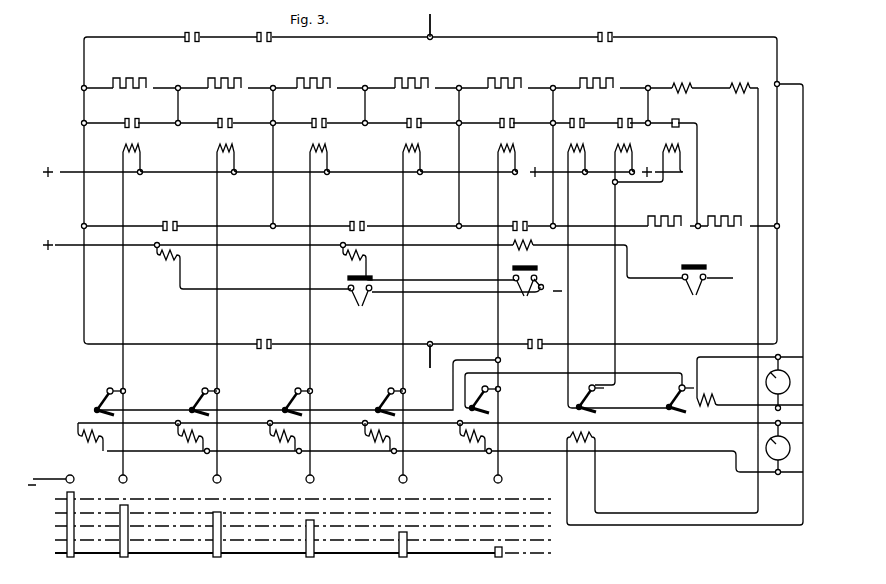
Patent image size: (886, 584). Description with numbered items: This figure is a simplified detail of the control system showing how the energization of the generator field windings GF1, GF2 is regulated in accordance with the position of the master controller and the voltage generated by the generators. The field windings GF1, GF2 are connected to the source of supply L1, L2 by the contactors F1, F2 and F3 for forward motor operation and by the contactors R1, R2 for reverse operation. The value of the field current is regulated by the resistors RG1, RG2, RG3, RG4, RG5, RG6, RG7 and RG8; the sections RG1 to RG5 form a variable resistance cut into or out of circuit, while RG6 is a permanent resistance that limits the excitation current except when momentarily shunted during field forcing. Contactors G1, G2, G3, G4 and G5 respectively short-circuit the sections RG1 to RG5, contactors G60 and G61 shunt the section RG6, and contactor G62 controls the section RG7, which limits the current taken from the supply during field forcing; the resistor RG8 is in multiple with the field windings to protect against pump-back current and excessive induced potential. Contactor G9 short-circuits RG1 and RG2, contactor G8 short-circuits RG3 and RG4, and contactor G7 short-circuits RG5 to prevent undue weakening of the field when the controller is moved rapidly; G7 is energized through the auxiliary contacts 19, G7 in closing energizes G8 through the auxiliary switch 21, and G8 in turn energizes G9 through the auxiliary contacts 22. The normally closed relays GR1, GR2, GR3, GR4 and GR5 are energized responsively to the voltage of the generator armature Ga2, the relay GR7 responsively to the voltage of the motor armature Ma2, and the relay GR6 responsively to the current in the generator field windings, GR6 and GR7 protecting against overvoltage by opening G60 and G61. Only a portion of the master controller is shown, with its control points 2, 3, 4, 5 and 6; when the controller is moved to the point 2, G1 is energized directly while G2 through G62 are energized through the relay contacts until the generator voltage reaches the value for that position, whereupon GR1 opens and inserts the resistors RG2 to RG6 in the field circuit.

The contactor F1 is at (534, 354).
The contactor F2 is at (264, 46).
The contactor F3 is at (192, 46).
The contactor R1 is at (263, 355).
The contactor R2 is at (604, 28).
The source of supply conductor L1 is at (441, 23).
The source of supply conductor L2 is at (420, 358).
The generator field resistor section RG1 is at (129, 77).
The generator field resistor section RG2 is at (224, 77).
The generator field resistor section RG3 is at (313, 77).
The generator field resistor section RG4 is at (411, 77).
The generator field resistor section RG5 is at (504, 77).
The permanent resistance section RG6 is at (596, 77).
The resistor RG7 is at (664, 233).
The resistor RG8 is at (725, 233).
The generator field winding GF1 is at (685, 75).
The generator field winding GF2 is at (743, 75).
The resistor contactor G1 is at (132, 136).
The resistor contactor G2 is at (226, 136).
The resistor contactor G3 is at (320, 136).
The resistor contactor G4 is at (413, 136).
The resistor contactor G5 is at (508, 136).
The resistor contactor G60 is at (576, 136).
The resistor contactor G61 is at (621, 136).
The resistor contactor G62 is at (675, 136).
The contactor G7 is at (522, 227).
The contactor G8 is at (359, 217).
The contactor G9 is at (171, 217).
The auxiliary contacts 19 is at (694, 288).
The auxiliary switch 21 is at (525, 293).
The auxiliary contacts 22 is at (360, 299).
The relay GR1 is at (97, 417).
The relay GR2 is at (192, 418).
The relay GR3 is at (286, 416).
The relay GR4 is at (379, 416).
The relay GR5 is at (480, 399).
The relay GR6 is at (584, 396).
The relay GR7 is at (670, 400).
The motor armature Ma2 is at (768, 377).
The generator armature Ga2 is at (768, 443).
The master controller position 2 is at (296, 499).
The master controller position 3 is at (296, 513).
The master controller position 4 is at (296, 526).
The master controller position 5 is at (296, 540).
The master controller position 6 is at (296, 553).